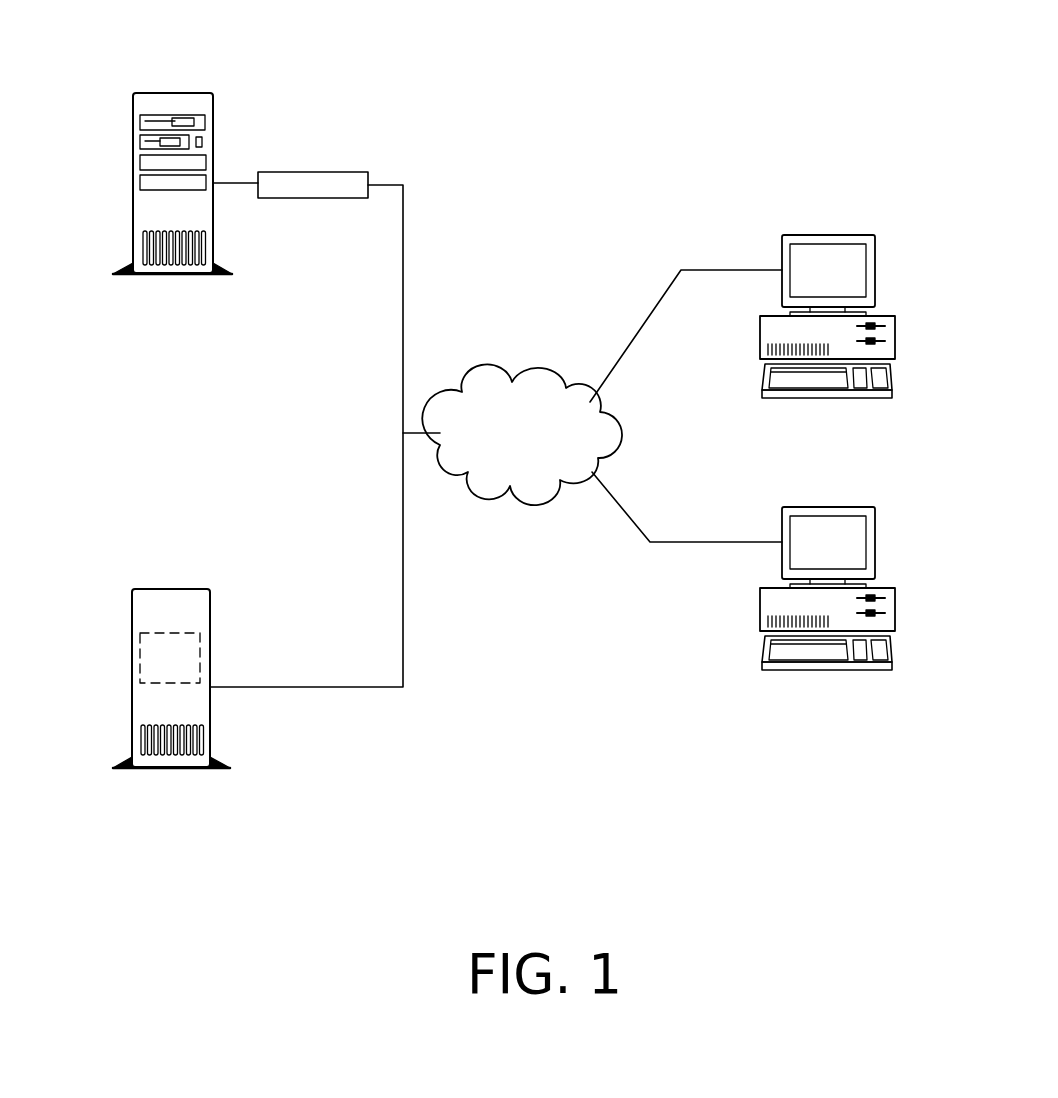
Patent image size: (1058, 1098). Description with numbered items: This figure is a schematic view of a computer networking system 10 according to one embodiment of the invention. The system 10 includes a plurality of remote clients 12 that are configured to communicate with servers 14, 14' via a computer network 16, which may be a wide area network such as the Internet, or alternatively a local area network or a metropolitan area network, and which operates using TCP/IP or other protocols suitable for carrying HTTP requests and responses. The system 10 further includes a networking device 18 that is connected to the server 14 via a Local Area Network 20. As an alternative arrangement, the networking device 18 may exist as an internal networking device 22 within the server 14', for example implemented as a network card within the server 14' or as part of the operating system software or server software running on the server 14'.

The computer networking system 10 is at (760, 66).
The remote client 12 is at (875, 275).
The server 14 is at (147, 201).
The server 14' is at (146, 676).
The computer network 16 is at (527, 480).
The networking device 18 is at (313, 172).
The local area network 20 is at (233, 181).
The internal networking device 22 is at (142, 655).